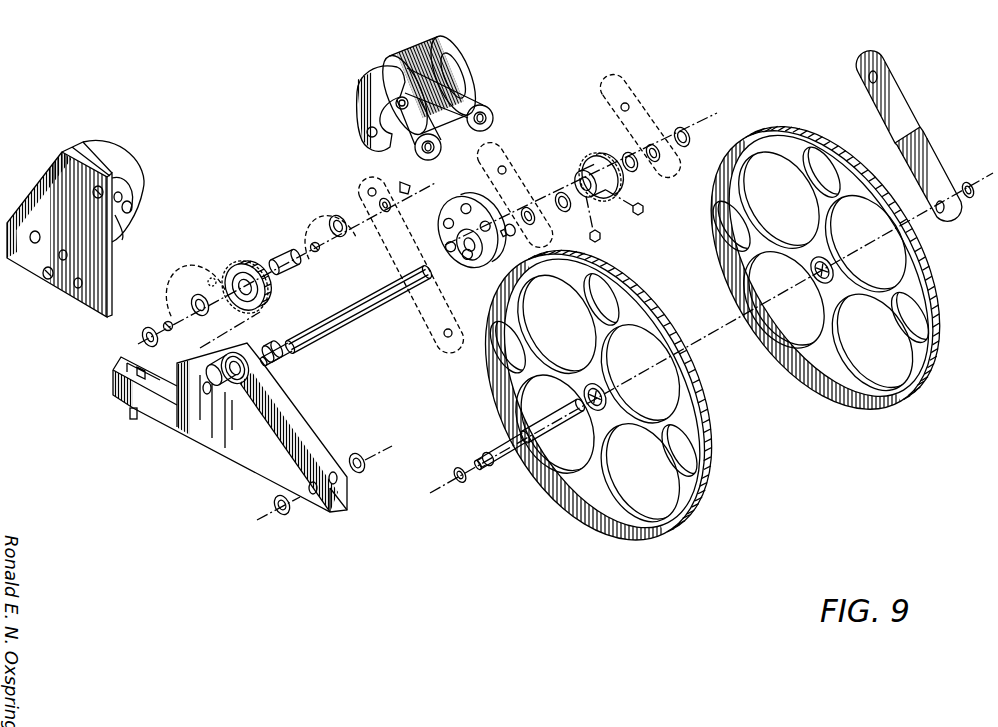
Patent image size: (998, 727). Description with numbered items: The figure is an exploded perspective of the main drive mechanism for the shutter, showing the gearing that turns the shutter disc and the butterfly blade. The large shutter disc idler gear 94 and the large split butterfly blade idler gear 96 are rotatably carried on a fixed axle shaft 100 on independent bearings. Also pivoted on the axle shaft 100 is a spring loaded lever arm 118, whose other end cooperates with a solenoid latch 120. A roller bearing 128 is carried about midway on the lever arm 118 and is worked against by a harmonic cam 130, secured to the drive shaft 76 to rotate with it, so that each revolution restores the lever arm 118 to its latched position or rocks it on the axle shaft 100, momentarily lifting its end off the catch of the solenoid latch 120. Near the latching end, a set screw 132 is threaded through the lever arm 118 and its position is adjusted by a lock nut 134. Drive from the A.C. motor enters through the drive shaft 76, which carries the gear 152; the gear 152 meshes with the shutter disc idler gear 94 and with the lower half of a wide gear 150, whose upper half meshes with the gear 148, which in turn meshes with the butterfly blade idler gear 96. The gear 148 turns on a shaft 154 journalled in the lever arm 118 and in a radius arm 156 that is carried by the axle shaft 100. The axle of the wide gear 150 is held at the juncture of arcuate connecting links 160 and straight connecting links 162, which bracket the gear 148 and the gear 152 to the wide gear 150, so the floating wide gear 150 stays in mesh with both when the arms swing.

The drive shaft 76 is at (352, 307).
The shutter disc idler gear 94 is at (863, 412).
The butterfly blade idler gear 96 is at (567, 503).
The fixed axle shaft 100 is at (510, 463).
The lever arm 118 is at (187, 437).
The solenoid latch 120 is at (110, 153).
The roller bearing 128 is at (248, 380).
The harmonic cam 130 is at (478, 197).
The set screw 132 is at (133, 420).
The lock nut 134 is at (132, 405).
The gear 148 is at (248, 257).
The wide gear 150 is at (412, 47).
The gear 152 is at (600, 157).
The shaft 154 is at (268, 340).
The radius arm 156 is at (893, 72).
The arcuate connecting links 160 is at (360, 95).
The straight connecting links 162 is at (447, 138).